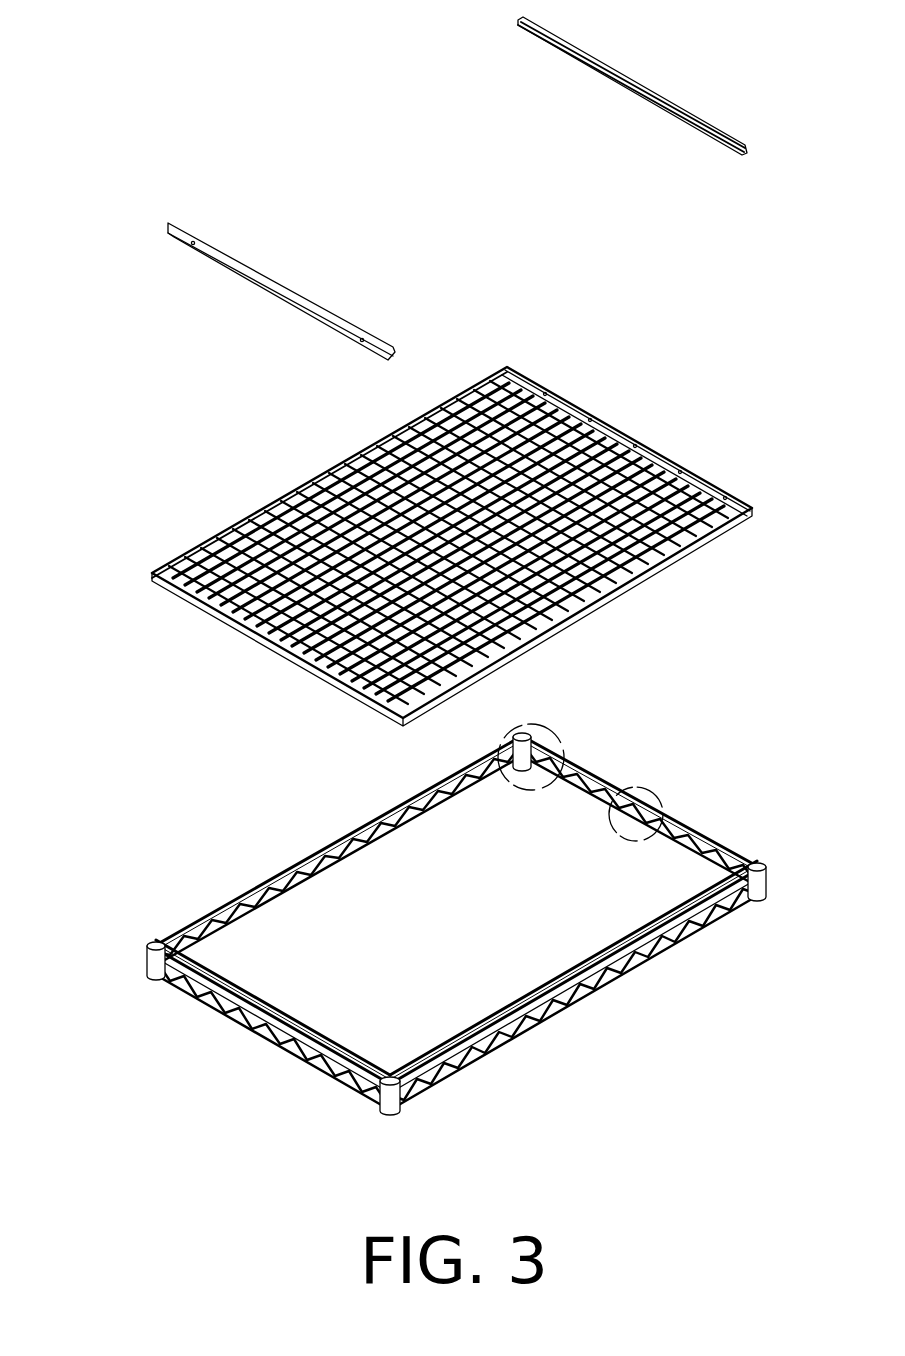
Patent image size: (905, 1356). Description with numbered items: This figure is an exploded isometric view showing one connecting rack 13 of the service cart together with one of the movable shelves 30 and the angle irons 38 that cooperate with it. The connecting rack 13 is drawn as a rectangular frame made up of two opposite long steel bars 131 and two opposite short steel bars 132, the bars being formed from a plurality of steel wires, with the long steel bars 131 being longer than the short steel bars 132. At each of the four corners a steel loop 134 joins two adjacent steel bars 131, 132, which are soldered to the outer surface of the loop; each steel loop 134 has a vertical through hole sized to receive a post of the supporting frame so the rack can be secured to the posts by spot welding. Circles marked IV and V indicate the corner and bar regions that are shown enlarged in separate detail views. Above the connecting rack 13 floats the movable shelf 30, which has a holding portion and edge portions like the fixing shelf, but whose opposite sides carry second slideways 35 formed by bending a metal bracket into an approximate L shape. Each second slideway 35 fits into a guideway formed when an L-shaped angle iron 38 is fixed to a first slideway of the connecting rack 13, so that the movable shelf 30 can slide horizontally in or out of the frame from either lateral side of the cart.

The connecting rack 13 is at (427, 888).
The movable shelf 30 is at (455, 537).
The second slideway 35 is at (590, 413).
The L-shaped angle iron 38 is at (241, 272).
The long steel bar 131 is at (305, 866).
The short steel bar 132 is at (233, 1025).
The steel loop 134 is at (150, 960).
The detail view IV indicator IV is at (550, 729).
The detail view V indicator V is at (718, 808).